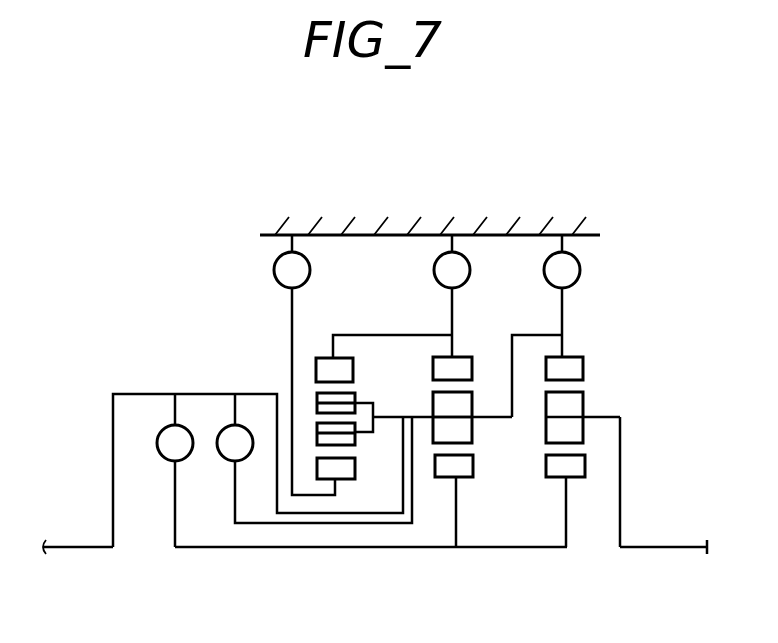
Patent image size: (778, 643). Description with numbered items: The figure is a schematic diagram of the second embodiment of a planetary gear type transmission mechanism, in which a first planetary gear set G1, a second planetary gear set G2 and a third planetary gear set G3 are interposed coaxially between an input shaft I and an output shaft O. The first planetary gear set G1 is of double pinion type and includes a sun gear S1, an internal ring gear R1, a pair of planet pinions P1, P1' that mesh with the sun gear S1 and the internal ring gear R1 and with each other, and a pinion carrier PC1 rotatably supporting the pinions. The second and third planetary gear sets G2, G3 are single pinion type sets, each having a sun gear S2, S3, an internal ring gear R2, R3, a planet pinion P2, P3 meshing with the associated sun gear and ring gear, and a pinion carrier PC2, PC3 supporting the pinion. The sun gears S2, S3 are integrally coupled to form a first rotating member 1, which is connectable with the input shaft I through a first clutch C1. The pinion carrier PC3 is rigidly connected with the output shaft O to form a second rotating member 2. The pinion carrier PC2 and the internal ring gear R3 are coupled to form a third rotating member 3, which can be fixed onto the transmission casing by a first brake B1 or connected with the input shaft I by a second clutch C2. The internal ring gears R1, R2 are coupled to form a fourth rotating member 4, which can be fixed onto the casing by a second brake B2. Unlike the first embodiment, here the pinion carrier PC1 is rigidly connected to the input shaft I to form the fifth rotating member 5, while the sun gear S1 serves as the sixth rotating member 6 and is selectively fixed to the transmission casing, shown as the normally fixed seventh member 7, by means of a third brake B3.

The seventh member 7 is at (398, 228).
The sixth rotating member 6 is at (287, 300).
The fifth rotating member 5 is at (243, 389).
The fourth rotating member 4 is at (454, 309).
The third rotating member 3 is at (565, 310).
The first rotating member 1 is at (440, 556).
The second rotating member 2 is at (627, 511).
The input shaft I is at (69, 546).
The output shaft O is at (683, 546).
The first brake B1 is at (581, 268).
The second brake B2 is at (434, 270).
The third brake B3 is at (310, 270).
The first clutch C1 is at (170, 461).
The second clutch C2 is at (230, 461).
The first planetary gear set G1 is at (407, 453).
The second planetary gear set G2 is at (479, 459).
The third planetary gear set G3 is at (616, 464).
The internal ring gear R1 is at (320, 357).
The internal ring gear R2 is at (472, 362).
The internal ring gear R3 is at (583, 364).
The planet pinion P1 is at (352, 447).
The planet pinion P1' is at (359, 387).
The planet pinion P2 is at (472, 401).
The planet pinion P3 is at (583, 398).
The pinion carrier PC1 is at (390, 416).
The pinion carrier PC2 is at (488, 419).
The pinion carrier PC3 is at (622, 420).
The sun gear S1 is at (353, 481).
The sun gear S2 is at (446, 478).
The sun gear S3 is at (587, 563).